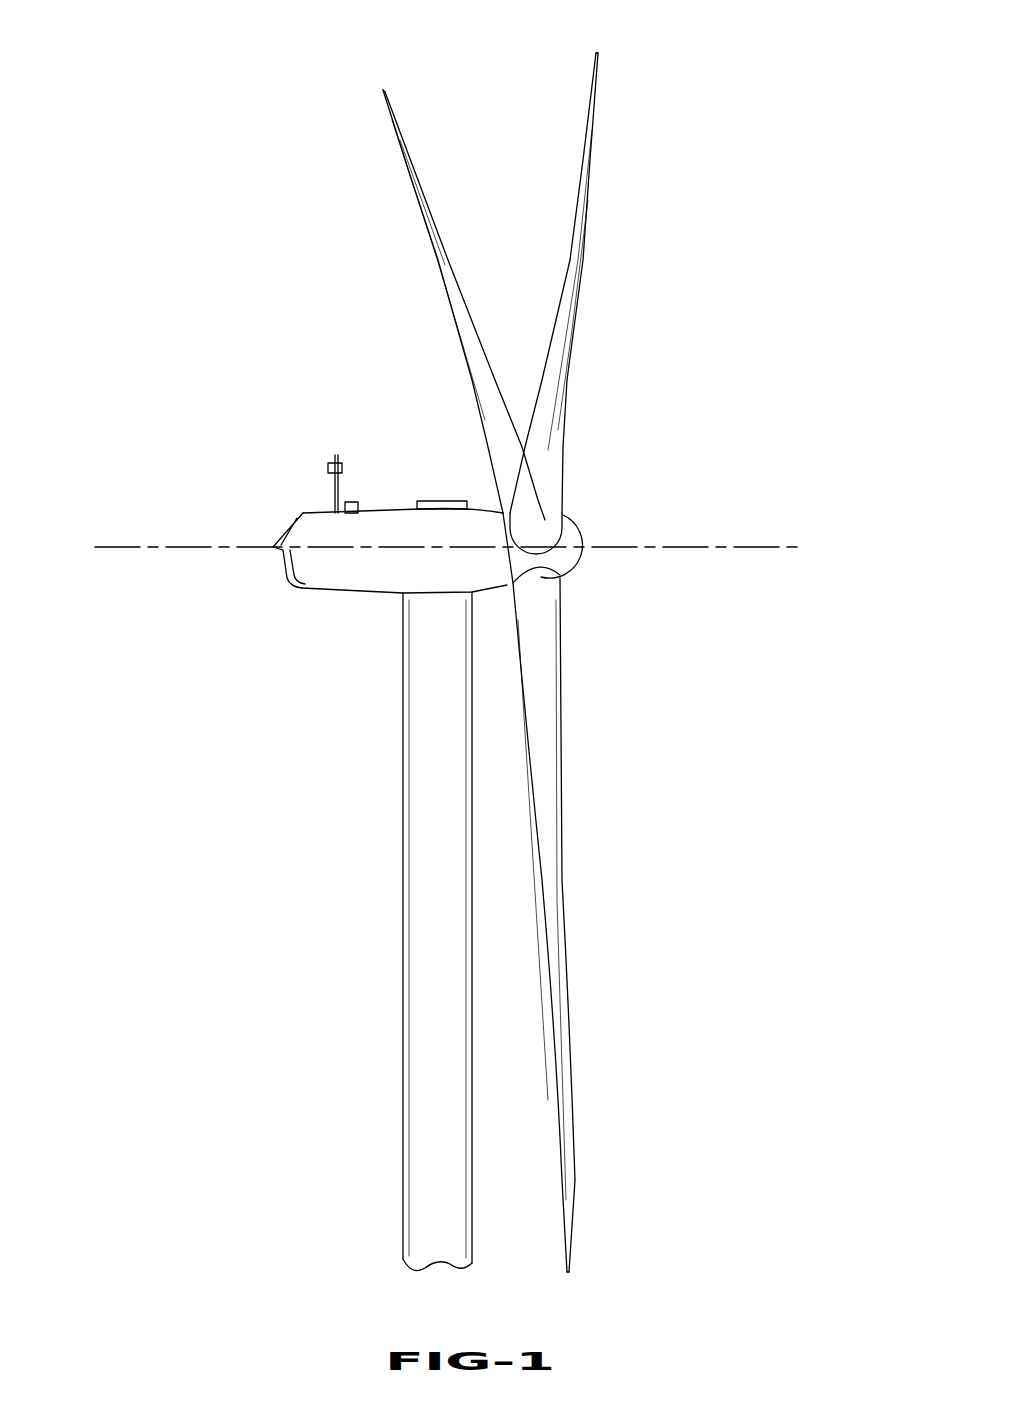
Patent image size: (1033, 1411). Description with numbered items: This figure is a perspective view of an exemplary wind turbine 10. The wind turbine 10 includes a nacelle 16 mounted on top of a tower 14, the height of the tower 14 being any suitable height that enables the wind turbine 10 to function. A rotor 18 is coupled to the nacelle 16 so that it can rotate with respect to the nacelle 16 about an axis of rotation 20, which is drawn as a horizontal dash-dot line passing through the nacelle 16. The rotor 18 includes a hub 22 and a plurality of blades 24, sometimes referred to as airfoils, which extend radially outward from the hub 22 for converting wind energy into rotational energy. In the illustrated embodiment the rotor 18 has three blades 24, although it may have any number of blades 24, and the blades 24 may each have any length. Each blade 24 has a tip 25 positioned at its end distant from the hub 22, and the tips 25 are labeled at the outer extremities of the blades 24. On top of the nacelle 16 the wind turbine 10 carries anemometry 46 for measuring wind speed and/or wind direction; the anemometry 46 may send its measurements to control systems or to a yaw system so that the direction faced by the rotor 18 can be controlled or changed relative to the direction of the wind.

The wind turbine 10 is at (186, 266).
The tower 14 is at (403, 755).
The nacelle 16 is at (318, 590).
The rotor 18 is at (578, 617).
The axis of rotation 20 is at (713, 547).
The hub 22 is at (580, 568).
The blades 24 is at (422, 212).
The tip 25 is at (383, 91).
The anemometry 46 is at (330, 468).